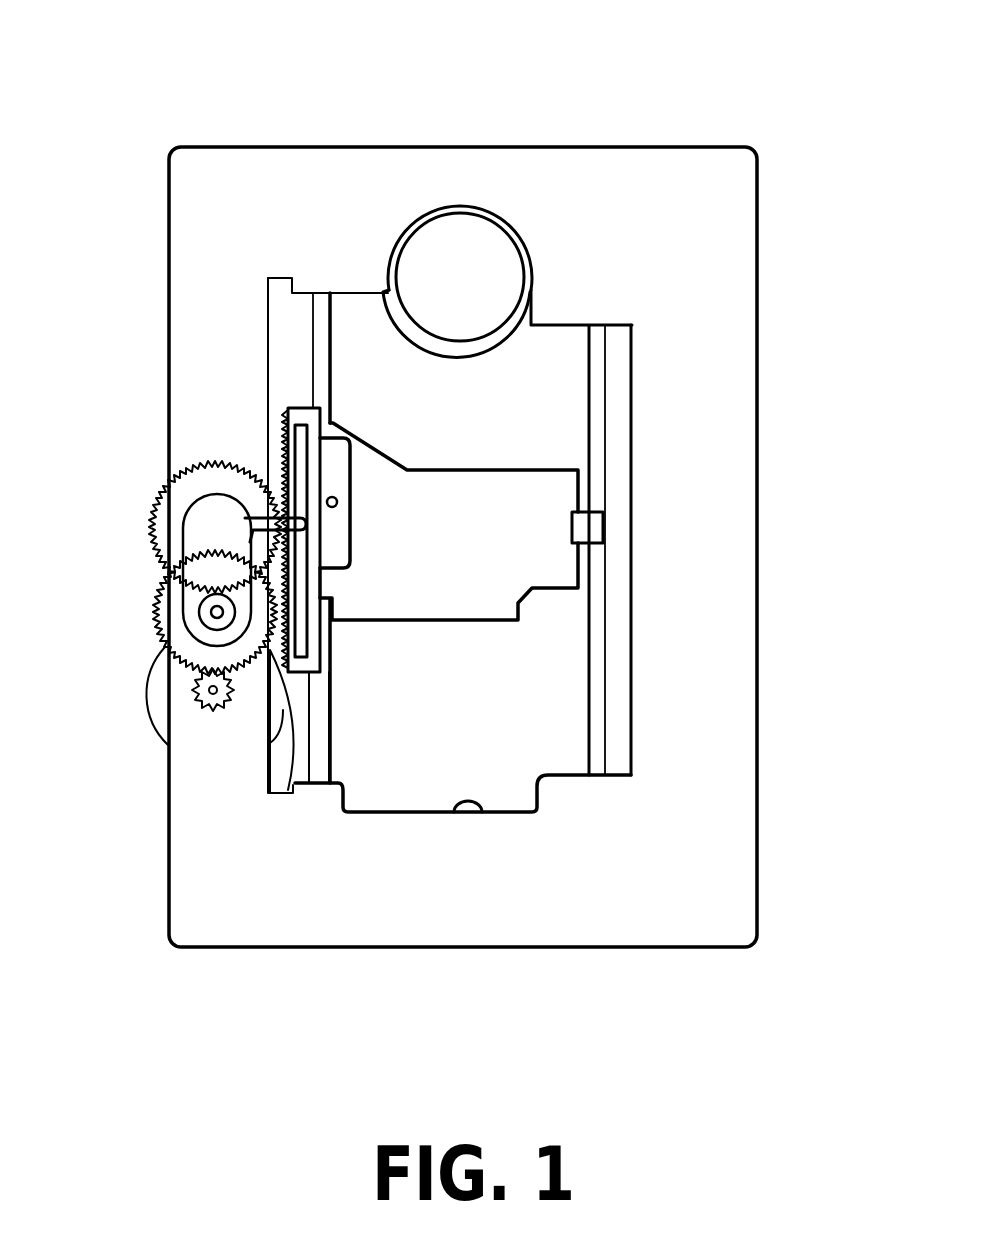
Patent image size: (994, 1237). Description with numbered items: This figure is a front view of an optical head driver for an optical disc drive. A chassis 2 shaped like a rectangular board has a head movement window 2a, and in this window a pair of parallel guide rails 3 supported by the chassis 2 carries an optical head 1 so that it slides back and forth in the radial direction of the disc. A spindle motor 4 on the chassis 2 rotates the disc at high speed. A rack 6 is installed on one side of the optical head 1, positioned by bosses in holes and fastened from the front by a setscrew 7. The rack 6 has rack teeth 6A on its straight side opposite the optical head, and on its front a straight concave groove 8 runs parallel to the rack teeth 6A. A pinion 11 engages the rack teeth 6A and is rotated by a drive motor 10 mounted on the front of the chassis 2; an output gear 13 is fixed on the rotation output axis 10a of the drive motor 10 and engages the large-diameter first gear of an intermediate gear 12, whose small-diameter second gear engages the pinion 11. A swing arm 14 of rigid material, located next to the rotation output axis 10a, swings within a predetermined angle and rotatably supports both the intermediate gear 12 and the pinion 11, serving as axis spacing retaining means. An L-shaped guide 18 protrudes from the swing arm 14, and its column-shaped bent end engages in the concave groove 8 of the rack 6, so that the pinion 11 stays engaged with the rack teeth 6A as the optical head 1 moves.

The optical head 1 is at (513, 568).
The chassis 2 is at (281, 187).
The head movement window 2a is at (485, 813).
The guide rail 3 is at (317, 343).
The spindle motor 4 is at (460, 248).
The rack 6 is at (325, 467).
The rack tooth 6A is at (280, 442).
The setscrew 7 is at (338, 502).
The concave groove 8 is at (297, 585).
The drive motor 10 is at (292, 790).
The rotation output axis 10a is at (205, 692).
The pinion 11 is at (180, 493).
The intermediate gear 12 is at (165, 635).
The output gear 13 is at (226, 698).
The swing arm 14 is at (203, 563).
The guide 18 is at (262, 542).